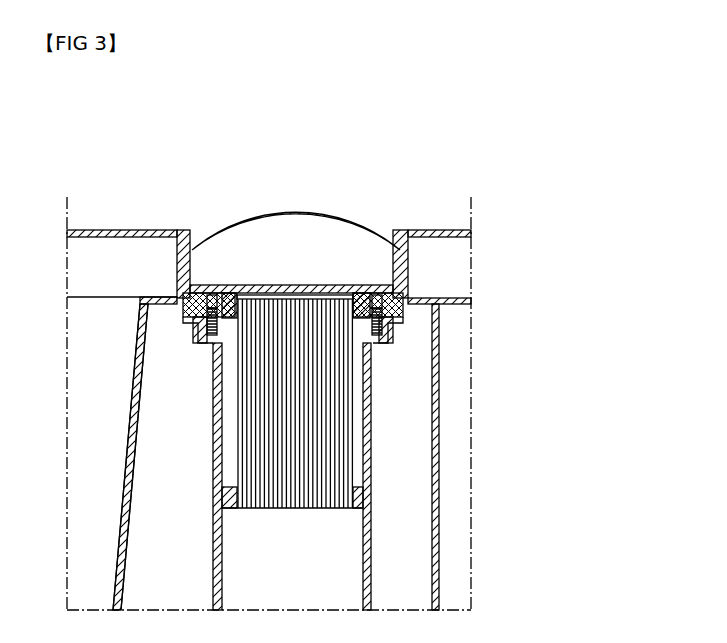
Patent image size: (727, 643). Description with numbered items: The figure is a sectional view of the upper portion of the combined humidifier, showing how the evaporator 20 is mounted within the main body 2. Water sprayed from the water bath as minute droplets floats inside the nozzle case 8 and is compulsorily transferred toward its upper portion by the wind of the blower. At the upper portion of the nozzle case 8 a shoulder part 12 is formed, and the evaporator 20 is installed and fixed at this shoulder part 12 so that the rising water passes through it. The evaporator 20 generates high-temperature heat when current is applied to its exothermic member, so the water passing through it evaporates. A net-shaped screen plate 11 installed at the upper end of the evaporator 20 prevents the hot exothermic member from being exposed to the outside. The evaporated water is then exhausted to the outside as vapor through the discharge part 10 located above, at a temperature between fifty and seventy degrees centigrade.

The main body 2 is at (100, 231).
The nozzle case 8 is at (368, 583).
The discharge part 10 is at (355, 228).
The net-shaped screen plate 11 is at (247, 290).
The shoulder part 12 is at (392, 362).
The evaporator 20 is at (358, 411).